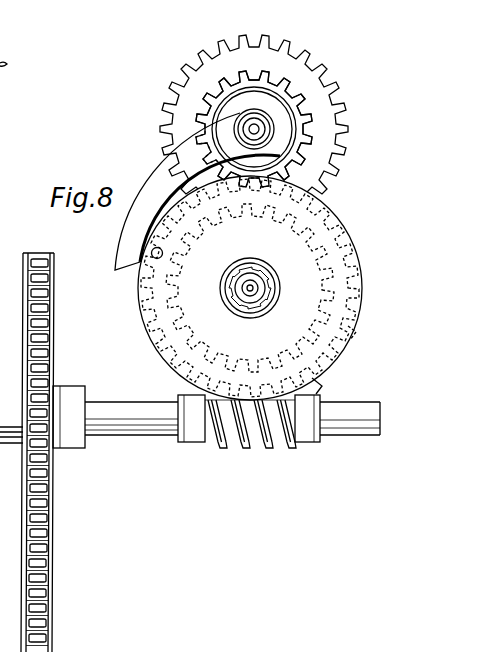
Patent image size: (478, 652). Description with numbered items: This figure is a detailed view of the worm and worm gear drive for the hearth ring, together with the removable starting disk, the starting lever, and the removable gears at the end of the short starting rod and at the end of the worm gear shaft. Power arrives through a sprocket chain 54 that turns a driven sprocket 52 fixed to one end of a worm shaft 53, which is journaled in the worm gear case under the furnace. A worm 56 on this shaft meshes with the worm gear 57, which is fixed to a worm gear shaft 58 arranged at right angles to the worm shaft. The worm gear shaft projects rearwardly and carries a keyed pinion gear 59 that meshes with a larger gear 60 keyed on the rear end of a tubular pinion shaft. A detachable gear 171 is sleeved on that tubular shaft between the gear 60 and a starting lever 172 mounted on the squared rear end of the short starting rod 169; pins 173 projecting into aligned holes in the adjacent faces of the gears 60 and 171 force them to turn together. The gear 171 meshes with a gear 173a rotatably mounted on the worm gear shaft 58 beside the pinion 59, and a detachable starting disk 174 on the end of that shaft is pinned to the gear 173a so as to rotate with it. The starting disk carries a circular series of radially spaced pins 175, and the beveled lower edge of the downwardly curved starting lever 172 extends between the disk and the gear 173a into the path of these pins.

The driven sprocket 52 is at (42, 563).
The worm shaft 53 is at (132, 437).
The sprocket chain 54 is at (48, 632).
The worm 56 is at (223, 447).
The worm gear 57 is at (147, 333).
The worm gear shaft 58 is at (250, 288).
The pinion gear 59 is at (200, 333).
The gear 60 is at (254, 129).
The short starting rod 169 is at (254, 129).
The detachable gear 171 is at (292, 118).
The starting lever 172 is at (128, 233).
The pins 173 is at (150, 268).
The gear 173a is at (352, 333).
The detachable starting disk 174 is at (250, 288).
The pins 175 is at (322, 386).